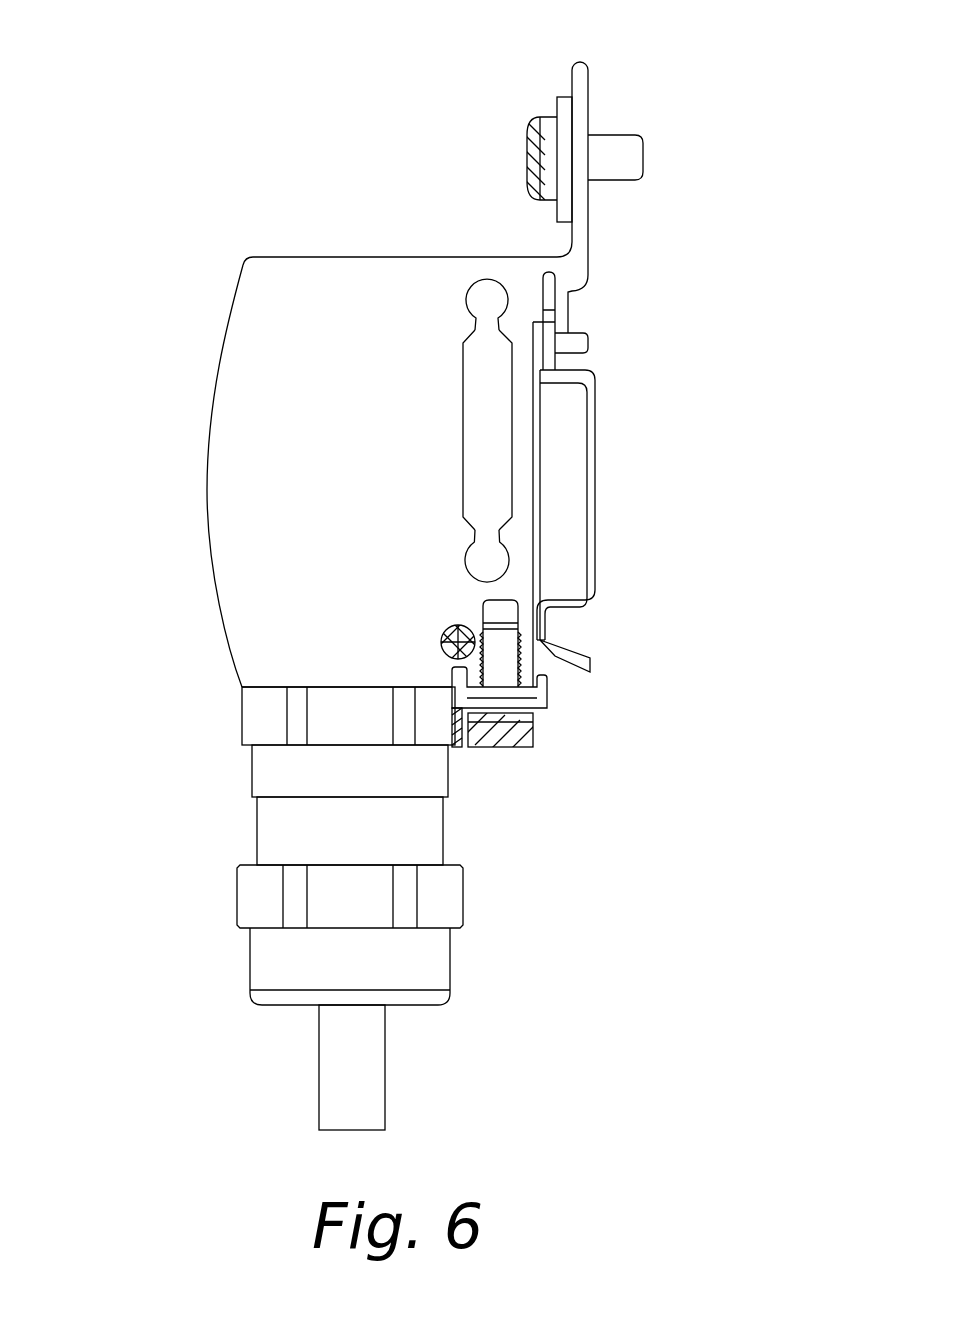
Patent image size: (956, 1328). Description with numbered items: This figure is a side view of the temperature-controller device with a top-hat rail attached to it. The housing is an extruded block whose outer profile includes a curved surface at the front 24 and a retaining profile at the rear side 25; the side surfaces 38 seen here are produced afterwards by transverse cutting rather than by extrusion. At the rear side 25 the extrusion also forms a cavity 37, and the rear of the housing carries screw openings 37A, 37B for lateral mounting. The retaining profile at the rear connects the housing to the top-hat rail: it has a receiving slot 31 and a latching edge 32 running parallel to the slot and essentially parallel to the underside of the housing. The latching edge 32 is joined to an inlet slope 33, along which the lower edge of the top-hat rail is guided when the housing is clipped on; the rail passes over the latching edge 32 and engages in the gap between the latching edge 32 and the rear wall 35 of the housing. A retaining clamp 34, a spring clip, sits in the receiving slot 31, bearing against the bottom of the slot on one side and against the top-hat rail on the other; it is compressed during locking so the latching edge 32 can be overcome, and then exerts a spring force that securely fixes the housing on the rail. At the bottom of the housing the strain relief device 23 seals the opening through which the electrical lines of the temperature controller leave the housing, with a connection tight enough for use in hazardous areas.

The strain relief device 23 is at (463, 888).
The front 24 is at (200, 372).
The rear side 25 is at (538, 450).
The receiving slot 31 is at (542, 332).
The latching edge 32 is at (548, 633).
The inlet slope 33 is at (578, 644).
The retaining clamp 34 is at (550, 340).
The rear wall 35 is at (537, 572).
The cavity 37 is at (487, 423).
The screw opening 37A is at (480, 295).
The screw opening 37B is at (483, 558).
The side surfaces 38 is at (315, 455).